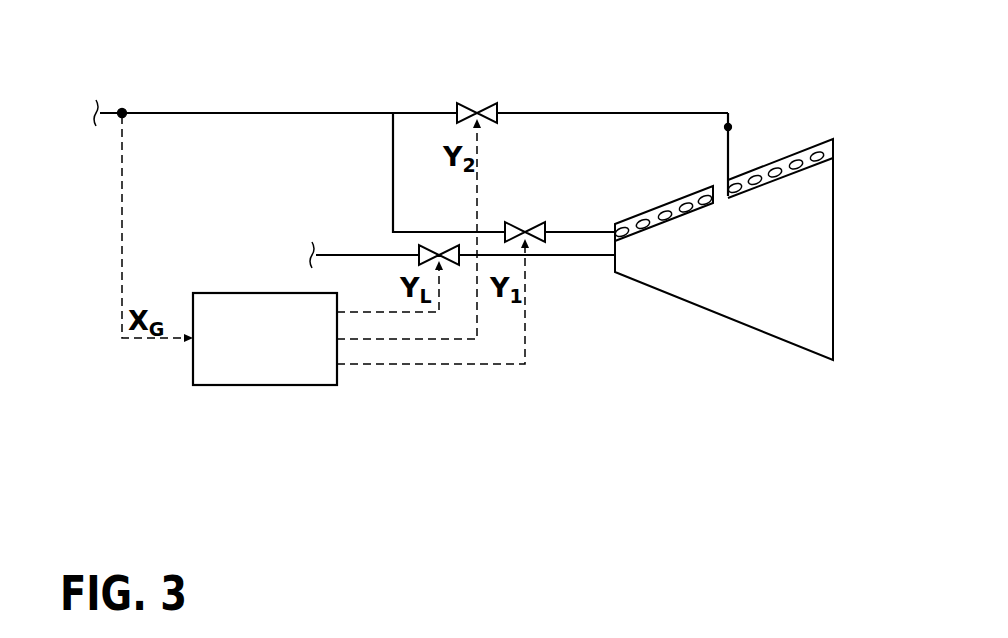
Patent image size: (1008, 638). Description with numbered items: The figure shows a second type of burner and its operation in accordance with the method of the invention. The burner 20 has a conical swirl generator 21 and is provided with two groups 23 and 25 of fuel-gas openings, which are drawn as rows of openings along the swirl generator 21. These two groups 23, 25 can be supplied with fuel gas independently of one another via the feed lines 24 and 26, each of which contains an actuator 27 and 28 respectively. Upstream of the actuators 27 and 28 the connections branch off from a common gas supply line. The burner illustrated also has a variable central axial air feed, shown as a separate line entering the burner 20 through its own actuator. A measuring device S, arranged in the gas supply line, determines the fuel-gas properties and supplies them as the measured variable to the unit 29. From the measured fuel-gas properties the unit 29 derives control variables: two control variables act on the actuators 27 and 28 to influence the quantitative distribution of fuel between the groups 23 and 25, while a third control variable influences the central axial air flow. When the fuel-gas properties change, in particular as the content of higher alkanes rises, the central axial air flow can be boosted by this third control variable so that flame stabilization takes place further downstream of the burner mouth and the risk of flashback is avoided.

The burner 20 is at (790, 270).
The conical swirl generator 21 is at (834, 200).
The group of fuel-gas openings 23 is at (742, 135).
The feed line 24 is at (729, 126).
The group of fuel-gas openings 25 is at (672, 205).
The feed line 26 is at (580, 230).
The actuator 27 is at (485, 110).
The actuator 28 is at (530, 242).
The unit 29 is at (226, 387).
The measuring device S is at (120, 109).